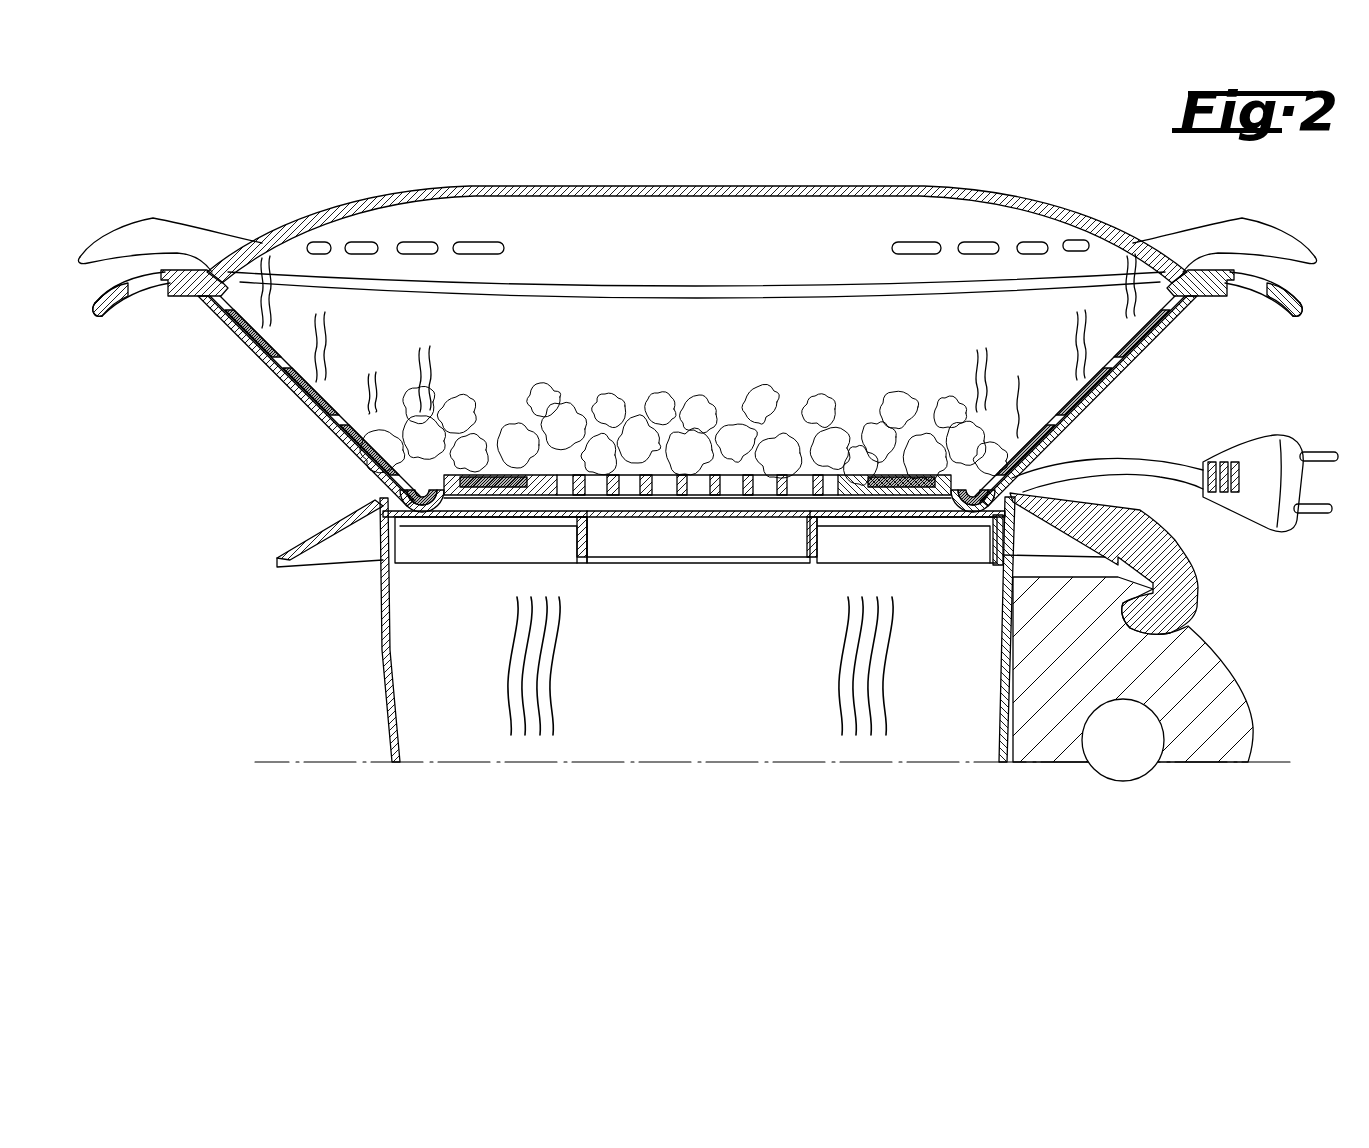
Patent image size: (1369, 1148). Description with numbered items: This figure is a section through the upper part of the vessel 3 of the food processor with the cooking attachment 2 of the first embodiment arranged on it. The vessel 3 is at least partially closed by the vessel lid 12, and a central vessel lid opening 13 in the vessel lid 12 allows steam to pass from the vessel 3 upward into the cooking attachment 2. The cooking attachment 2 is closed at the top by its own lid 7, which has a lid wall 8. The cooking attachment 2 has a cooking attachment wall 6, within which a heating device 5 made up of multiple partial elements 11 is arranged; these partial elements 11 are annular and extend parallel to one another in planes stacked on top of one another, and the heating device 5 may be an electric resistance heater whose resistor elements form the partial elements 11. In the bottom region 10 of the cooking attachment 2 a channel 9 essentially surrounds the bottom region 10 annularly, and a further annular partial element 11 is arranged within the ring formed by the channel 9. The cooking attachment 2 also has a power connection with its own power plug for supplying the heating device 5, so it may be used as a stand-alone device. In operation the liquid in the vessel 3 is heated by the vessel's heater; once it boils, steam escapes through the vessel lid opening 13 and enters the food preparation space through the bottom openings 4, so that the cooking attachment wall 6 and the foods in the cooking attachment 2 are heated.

The cooking attachment 2 is at (1145, 383).
The vessel 3 is at (425, 648).
The bottom opening 4 is at (667, 481).
The heating device 5 is at (339, 381).
The cooking attachment wall 6 is at (1075, 432).
The lid 7 is at (932, 215).
The lid wall 8 is at (808, 190).
The channel 9 is at (424, 487).
The bottom region 10 is at (850, 476).
The partial element 11 is at (380, 496).
The vessel lid 12 is at (333, 550).
The vessel lid opening 13 is at (687, 538).